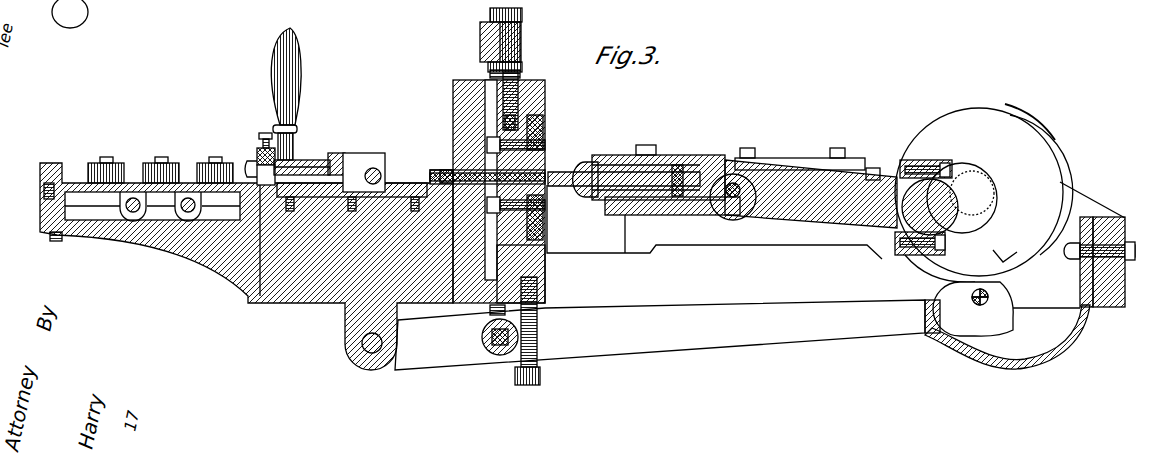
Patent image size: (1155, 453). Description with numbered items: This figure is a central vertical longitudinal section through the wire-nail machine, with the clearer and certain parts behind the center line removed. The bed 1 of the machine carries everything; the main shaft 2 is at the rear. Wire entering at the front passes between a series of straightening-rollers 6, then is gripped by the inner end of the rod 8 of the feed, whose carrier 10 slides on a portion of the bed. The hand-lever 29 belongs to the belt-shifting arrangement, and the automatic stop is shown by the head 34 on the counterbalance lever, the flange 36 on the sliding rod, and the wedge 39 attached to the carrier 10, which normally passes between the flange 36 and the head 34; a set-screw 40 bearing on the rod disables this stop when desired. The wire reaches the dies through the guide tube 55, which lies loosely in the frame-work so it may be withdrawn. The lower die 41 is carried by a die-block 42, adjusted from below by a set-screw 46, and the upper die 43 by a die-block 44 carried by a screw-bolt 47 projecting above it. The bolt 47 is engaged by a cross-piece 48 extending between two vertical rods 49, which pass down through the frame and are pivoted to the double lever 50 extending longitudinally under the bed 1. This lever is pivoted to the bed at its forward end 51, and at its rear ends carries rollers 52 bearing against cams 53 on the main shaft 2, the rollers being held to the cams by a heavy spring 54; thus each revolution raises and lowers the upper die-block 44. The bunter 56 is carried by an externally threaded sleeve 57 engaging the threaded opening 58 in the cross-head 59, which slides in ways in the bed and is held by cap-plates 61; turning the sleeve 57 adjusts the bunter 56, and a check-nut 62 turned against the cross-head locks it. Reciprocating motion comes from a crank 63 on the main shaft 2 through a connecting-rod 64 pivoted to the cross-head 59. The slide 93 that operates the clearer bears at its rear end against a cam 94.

The bed 1 is at (299, 300).
The main shaft 2 is at (972, 193).
The straightening-rollers 6 is at (92, 166).
The rod 8 is at (386, 168).
The carrier 10 is at (345, 167).
The hand-lever 29 is at (297, 98).
The head 34 is at (258, 150).
The flange 36 is at (260, 173).
The wedge 39 is at (295, 173).
The set-screw 40 is at (265, 134).
The lower die 41 is at (546, 228).
The die-block 42 is at (546, 268).
The upper die 43 is at (545, 128).
The die-block 44 is at (546, 97).
The set-screw 46 is at (538, 342).
The screw-bolt 47 is at (519, 78).
The cross-piece 48 is at (480, 42).
The vertical rods 49 is at (489, 74).
The double lever 50 is at (737, 335).
The pivot 51 is at (368, 356).
The rollers 52 is at (973, 309).
The cams 53 is at (961, 266).
The spring 54 is at (1052, 358).
The guide tube 55 is at (452, 171).
The bunter 56 is at (551, 174).
The sleeve 57 is at (578, 191).
The threaded opening 58 is at (679, 165).
The cross-head 59 is at (672, 215).
The cap-plates 61 is at (786, 160).
The check-nut 62 is at (598, 157).
The crank 63 is at (951, 222).
The connecting-rod 64 is at (786, 214).
The slide 93 is at (873, 172).
The cam 94 is at (984, 190).